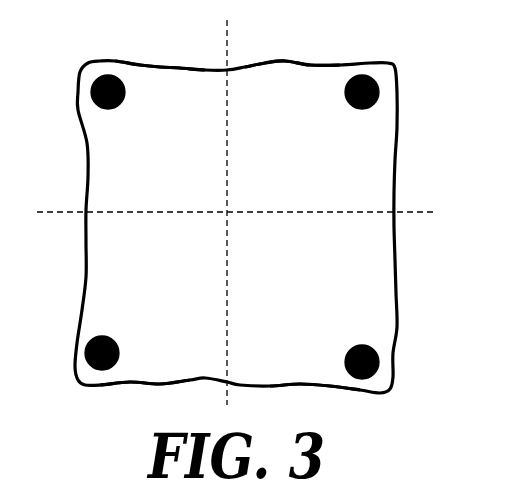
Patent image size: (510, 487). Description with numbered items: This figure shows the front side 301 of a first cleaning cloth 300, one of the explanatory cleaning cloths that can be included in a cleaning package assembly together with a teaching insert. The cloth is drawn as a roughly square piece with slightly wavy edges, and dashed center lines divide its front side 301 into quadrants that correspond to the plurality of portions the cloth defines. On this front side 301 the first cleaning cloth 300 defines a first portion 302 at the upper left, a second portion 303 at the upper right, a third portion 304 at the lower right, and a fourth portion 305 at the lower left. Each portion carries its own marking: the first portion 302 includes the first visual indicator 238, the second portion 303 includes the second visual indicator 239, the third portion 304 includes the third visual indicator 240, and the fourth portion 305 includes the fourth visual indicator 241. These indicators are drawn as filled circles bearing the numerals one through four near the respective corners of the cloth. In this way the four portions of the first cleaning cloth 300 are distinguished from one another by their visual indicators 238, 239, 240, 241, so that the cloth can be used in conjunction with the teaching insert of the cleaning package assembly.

The first cleaning cloth 300 is at (402, 173).
The front side 301 is at (306, 187).
The first portion 302 is at (187, 102).
The second portion 303 is at (260, 93).
The third portion 304 is at (338, 387).
The fourth portion 305 is at (173, 363).
The first visual indicator 238 is at (92, 83).
The second visual indicator 239 is at (379, 92).
The third visual indicator 240 is at (379, 362).
The fourth visual indicator 241 is at (85, 353).